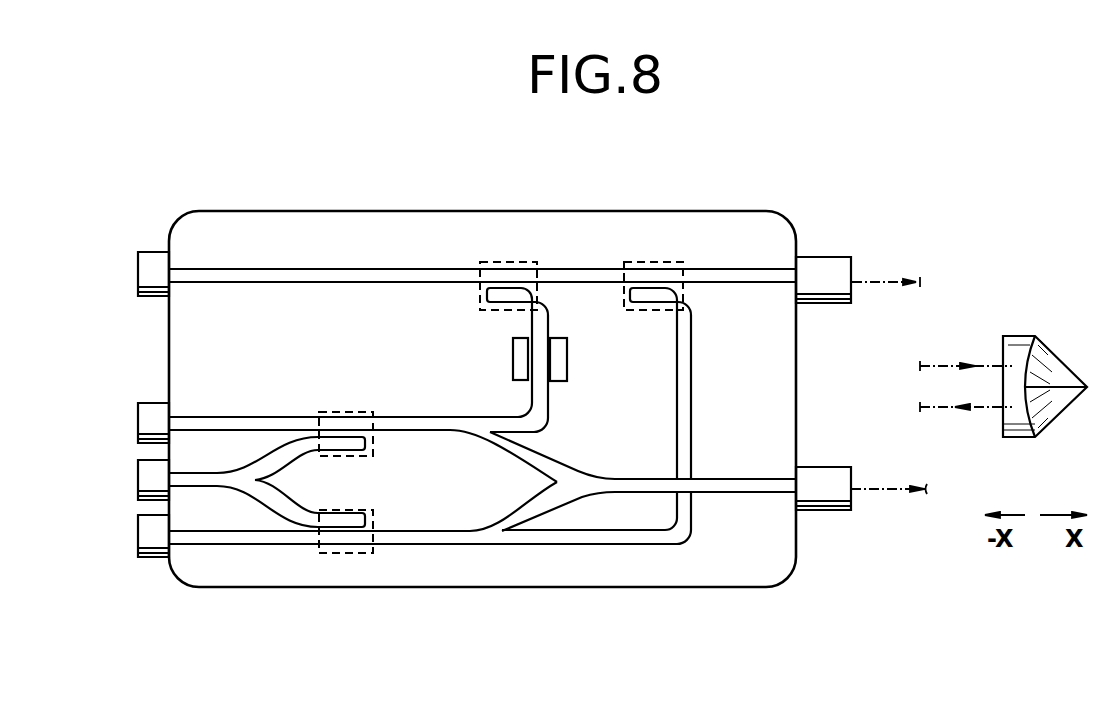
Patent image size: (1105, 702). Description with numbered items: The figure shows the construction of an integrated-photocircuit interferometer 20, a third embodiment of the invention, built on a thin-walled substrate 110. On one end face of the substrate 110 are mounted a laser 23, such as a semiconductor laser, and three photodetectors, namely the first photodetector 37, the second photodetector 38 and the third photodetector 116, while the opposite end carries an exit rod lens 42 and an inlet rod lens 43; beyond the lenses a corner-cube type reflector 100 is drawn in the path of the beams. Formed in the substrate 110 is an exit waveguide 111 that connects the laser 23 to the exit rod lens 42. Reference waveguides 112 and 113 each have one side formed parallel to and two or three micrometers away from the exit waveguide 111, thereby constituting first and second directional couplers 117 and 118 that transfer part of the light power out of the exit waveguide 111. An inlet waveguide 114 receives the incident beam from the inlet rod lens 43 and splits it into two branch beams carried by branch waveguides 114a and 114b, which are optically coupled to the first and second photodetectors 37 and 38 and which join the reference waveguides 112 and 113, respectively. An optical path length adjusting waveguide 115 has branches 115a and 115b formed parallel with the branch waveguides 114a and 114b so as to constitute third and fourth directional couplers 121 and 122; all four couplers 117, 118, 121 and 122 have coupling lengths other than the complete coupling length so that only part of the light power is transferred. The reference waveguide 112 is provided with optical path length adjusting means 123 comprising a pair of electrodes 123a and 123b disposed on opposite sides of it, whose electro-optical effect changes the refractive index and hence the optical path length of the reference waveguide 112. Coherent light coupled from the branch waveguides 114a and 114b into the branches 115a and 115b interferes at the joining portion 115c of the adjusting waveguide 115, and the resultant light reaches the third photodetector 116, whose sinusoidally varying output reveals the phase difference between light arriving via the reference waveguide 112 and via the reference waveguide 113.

The integrated-photocircuit interferometer 20 is at (608, 207).
The thin-walled substrate 110 is at (437, 213).
The laser 23 is at (142, 296).
The first photodetector 37 is at (144, 433).
The third photodetector 116 is at (142, 484).
The second photodetector 38 is at (144, 544).
The exit rod lens 42 is at (830, 268).
The inlet rod lens 43 is at (832, 510).
The exit waveguide 111 is at (338, 280).
The reference waveguide 112 is at (478, 430).
The reference waveguide 113 is at (691, 384).
The inlet waveguide 114 is at (627, 478).
The branch waveguide 114a is at (533, 465).
The branch waveguide 114b is at (530, 503).
The optical path length adjusting waveguide 115 is at (217, 473).
The branch 115a is at (296, 456).
The branch 115b is at (298, 509).
The joining portion 115c is at (228, 486).
The first directional coupler 117 is at (515, 261).
The second directional coupler 118 is at (665, 262).
The third directional coupler 121 is at (348, 412).
The fourth directional coupler 122 is at (345, 554).
The optical path length adjusting means 123 is at (606, 318).
The electrode 123a is at (522, 344).
The electrode 123b is at (564, 352).
The corner cube reflector 100 is at (1018, 437).